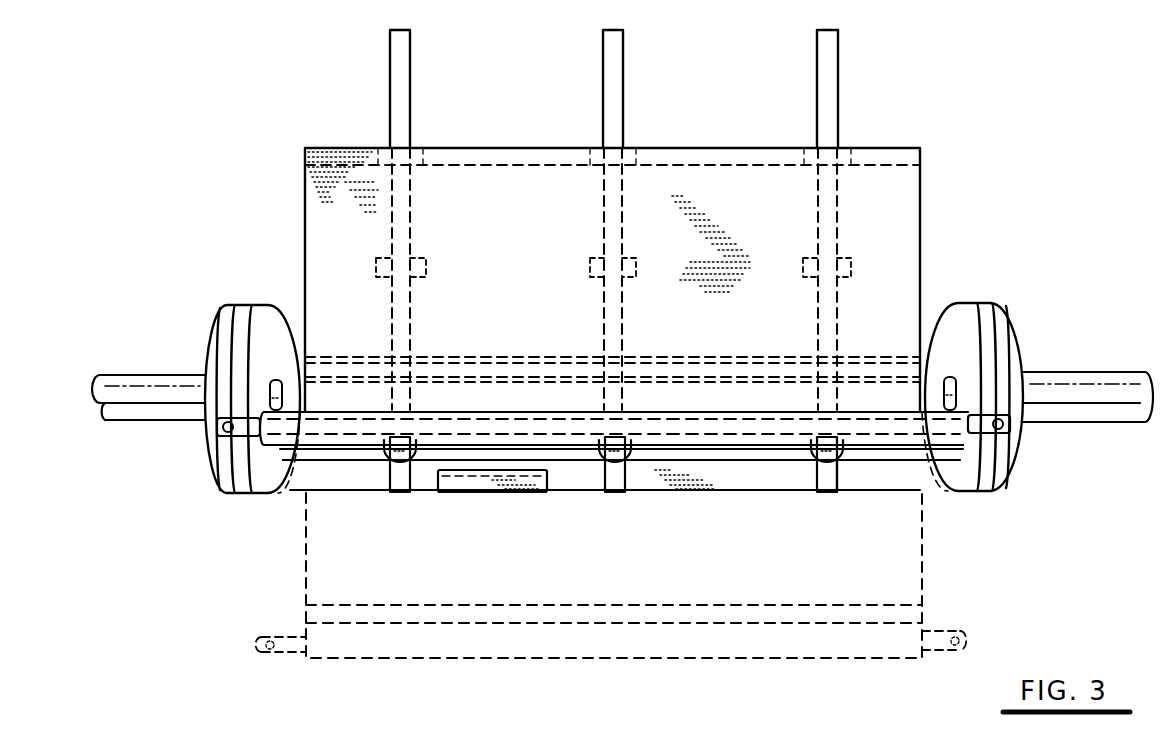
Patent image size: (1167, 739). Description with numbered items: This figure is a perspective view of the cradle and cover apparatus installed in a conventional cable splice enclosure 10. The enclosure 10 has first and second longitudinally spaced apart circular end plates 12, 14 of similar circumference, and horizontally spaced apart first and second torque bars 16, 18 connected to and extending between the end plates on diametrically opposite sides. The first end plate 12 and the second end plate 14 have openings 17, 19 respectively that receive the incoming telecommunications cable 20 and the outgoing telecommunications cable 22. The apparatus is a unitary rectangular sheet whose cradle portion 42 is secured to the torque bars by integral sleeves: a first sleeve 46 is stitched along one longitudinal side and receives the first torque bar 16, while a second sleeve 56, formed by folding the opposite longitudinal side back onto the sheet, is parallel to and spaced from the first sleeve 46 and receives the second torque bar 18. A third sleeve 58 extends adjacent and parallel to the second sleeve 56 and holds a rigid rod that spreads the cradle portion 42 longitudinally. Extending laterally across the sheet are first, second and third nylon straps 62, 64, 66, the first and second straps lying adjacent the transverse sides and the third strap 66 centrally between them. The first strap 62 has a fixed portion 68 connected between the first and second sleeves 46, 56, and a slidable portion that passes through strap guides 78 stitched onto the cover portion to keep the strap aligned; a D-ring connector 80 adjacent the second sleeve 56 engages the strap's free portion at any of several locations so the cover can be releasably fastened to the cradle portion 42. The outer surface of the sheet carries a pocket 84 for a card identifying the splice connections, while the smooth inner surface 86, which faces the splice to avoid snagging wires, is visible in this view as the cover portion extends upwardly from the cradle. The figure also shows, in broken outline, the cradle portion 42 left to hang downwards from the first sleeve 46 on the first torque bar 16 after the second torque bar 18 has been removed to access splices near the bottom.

The cable splice enclosure 10 is at (283, 192).
The first end plate 12 is at (1015, 335).
The second end plate 14 is at (213, 460).
The first torque bar 16 is at (476, 368).
The opening 17 is at (957, 383).
The second torque bar 18 is at (525, 428).
The opening 19 is at (281, 383).
The incoming telecommunications cable 20 is at (1114, 407).
The outgoing telecommunications cable 22 is at (135, 385).
The cradle portion 42 is at (708, 488).
The first sleeve 46 is at (533, 352).
The second sleeve 56 is at (732, 428).
The third sleeve 58 is at (368, 455).
The first strap 62 is at (823, 486).
The second strap 64 is at (395, 88).
The third strap 66 is at (613, 88).
The fixed portion 68 is at (836, 487).
The strap guides 78 is at (588, 264).
The D-ring connector 80 is at (603, 458).
The pocket 84 is at (488, 487).
The inner surface 86 is at (887, 213).